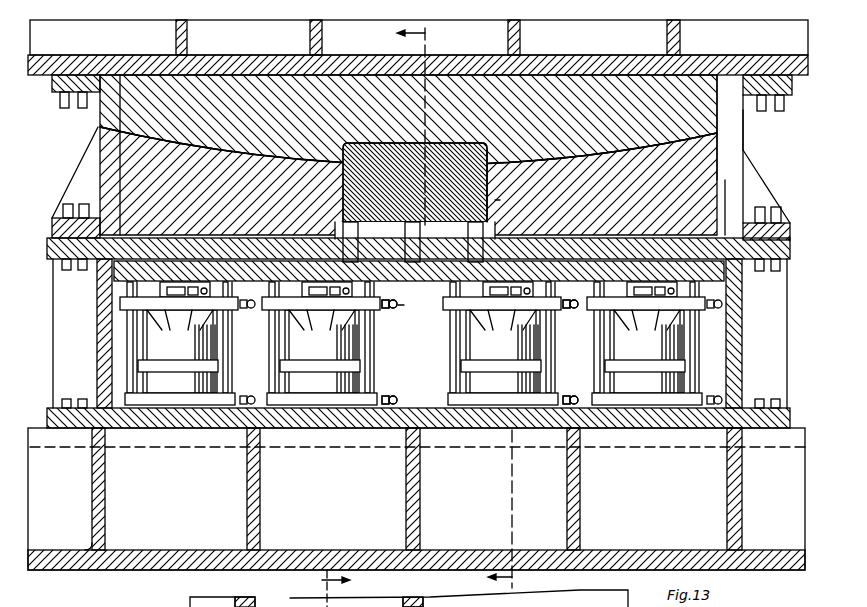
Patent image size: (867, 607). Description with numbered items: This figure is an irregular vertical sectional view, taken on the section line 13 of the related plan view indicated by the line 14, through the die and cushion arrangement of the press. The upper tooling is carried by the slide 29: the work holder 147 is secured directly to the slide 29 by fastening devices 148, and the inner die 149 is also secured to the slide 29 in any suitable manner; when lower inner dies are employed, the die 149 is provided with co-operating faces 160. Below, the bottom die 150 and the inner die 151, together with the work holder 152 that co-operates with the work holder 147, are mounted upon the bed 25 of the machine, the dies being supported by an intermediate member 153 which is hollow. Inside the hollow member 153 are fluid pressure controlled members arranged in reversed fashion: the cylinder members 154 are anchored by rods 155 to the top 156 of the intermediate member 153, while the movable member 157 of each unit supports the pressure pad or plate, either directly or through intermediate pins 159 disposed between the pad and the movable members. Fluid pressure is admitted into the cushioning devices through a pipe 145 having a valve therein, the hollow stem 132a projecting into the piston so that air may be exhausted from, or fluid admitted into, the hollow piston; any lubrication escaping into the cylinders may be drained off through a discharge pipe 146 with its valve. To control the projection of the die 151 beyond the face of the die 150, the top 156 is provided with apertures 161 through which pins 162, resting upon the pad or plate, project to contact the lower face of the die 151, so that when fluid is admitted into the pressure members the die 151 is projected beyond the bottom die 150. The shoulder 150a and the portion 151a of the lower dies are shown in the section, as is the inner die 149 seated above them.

The section line 13 is at (320, 588).
The figure reference line 14 is at (464, 308).
The press bed 25 is at (137, 553).
The slide 29 is at (418, 47).
The hollow stem 132a is at (652, 313).
The pipe 145 is at (389, 308).
The discharge pipe 146 is at (568, 397).
The work holder 147 is at (738, 128).
The fastening devices 148 is at (72, 110).
The inner die 149 is at (218, 85).
The bottom die 150 is at (578, 168).
The die shoulder 150a is at (500, 200).
The inner die 151 is at (475, 145).
The die insert portion 151a is at (447, 232).
The work holder 152 is at (735, 162).
The intermediate member 153 is at (100, 327).
The cylinder members 154 is at (192, 388).
The rods 155 is at (233, 347).
The top 156 is at (413, 299).
The movable member 157 is at (473, 343).
The pins 159 is at (312, 307).
The co-operating faces 160 is at (437, 143).
The apertures 161 is at (130, 248).
The pins 162 is at (413, 242).